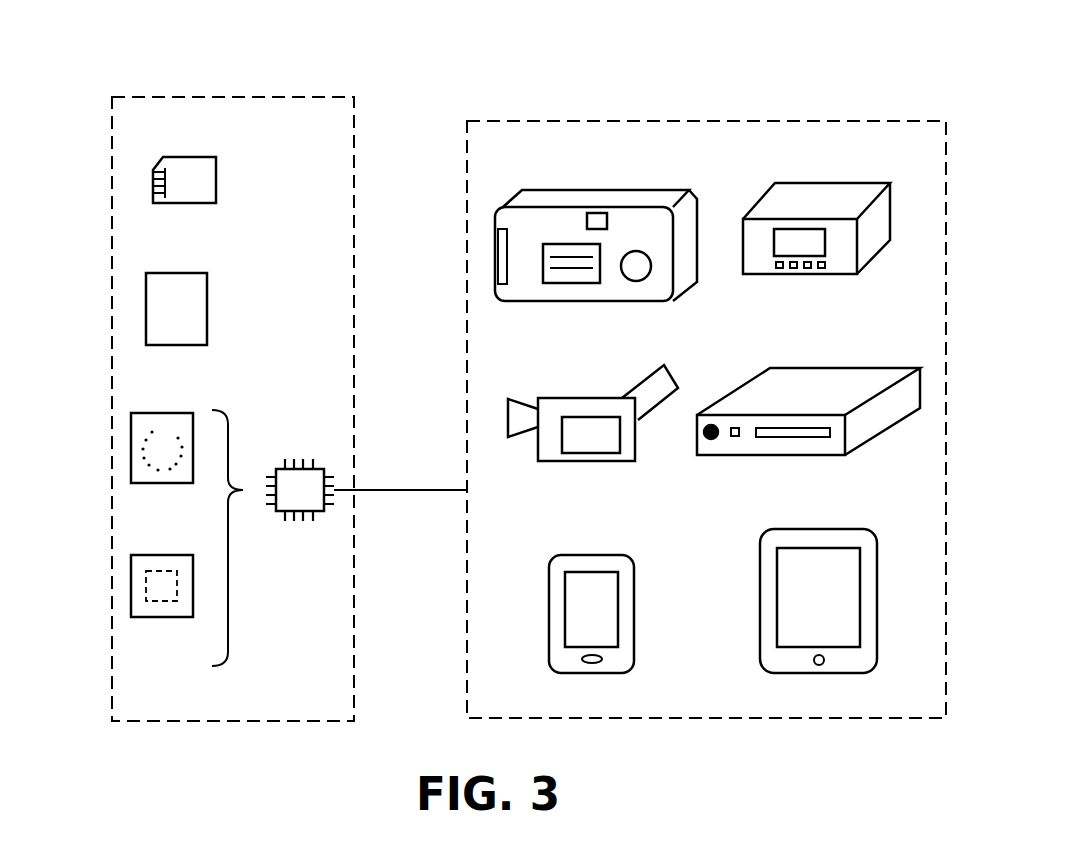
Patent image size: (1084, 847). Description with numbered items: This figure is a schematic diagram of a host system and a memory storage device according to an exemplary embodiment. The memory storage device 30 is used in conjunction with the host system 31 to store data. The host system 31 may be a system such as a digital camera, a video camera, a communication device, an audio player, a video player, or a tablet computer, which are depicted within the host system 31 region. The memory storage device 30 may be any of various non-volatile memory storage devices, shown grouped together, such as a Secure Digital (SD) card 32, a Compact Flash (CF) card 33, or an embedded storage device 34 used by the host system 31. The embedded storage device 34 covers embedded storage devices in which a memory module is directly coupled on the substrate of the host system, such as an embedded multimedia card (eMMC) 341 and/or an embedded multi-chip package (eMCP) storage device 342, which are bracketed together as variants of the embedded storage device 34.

The memory storage device 30 is at (222, 96).
The host system 31 is at (631, 120).
The Secure Digital (SD) card 32 is at (153, 186).
The Compact Flash (CF) card 33 is at (146, 311).
The embedded storage device 34 is at (300, 462).
The embedded multimedia card (eMMC) 341 is at (131, 451).
The embedded multi-chip package (eMCP) storage device 342 is at (131, 589).